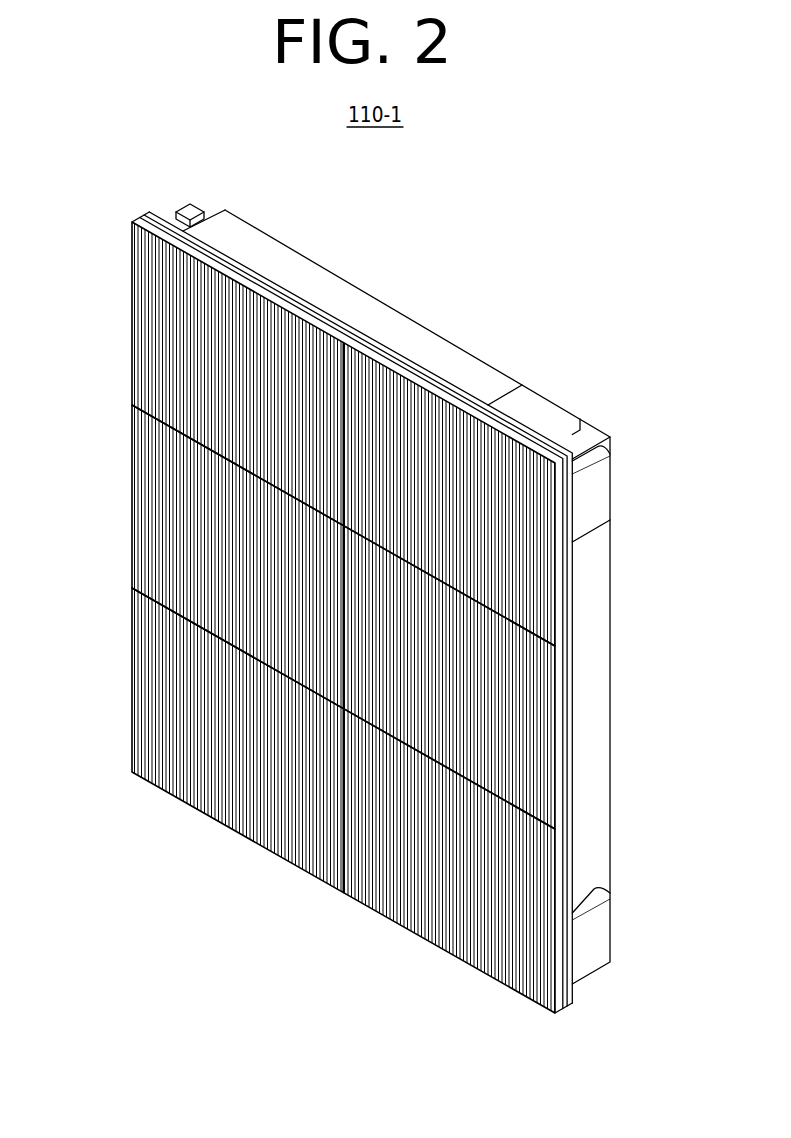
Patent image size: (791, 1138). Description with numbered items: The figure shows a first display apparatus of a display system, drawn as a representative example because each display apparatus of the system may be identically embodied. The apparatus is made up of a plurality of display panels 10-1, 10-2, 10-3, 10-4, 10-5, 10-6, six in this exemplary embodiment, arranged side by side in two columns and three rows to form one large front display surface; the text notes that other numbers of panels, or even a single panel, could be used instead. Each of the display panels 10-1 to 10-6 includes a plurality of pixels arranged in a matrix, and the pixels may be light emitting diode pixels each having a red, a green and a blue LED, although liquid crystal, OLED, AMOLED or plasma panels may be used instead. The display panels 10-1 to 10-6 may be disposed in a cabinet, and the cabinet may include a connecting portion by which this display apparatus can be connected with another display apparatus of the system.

The display panel 10-1 is at (132, 325).
The display panel 10-2 is at (552, 580).
The display panel 10-3 is at (132, 507).
The display panel 10-4 is at (552, 762).
The display panel 10-5 is at (132, 690).
The display panel 10-6 is at (522, 991).